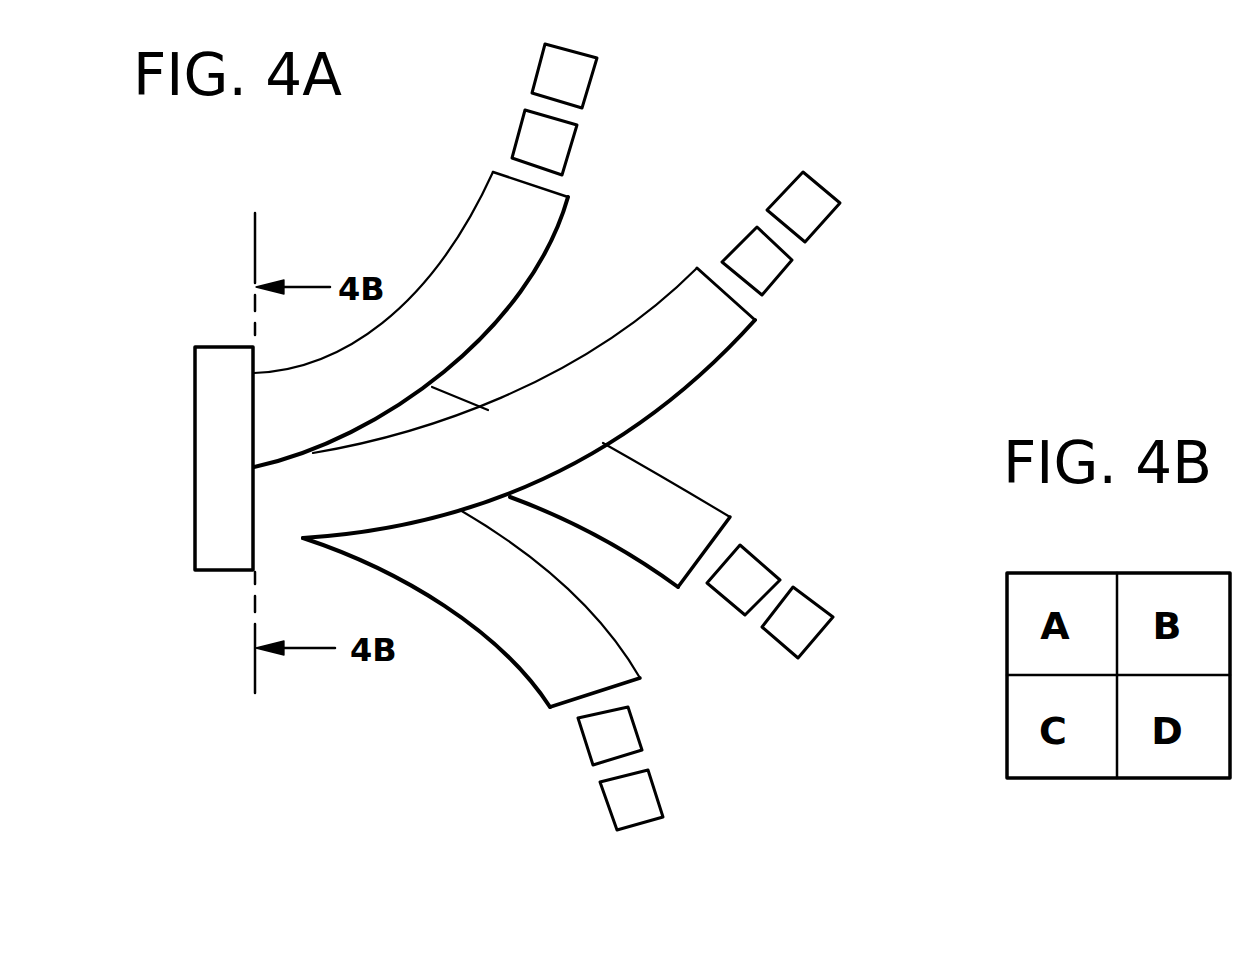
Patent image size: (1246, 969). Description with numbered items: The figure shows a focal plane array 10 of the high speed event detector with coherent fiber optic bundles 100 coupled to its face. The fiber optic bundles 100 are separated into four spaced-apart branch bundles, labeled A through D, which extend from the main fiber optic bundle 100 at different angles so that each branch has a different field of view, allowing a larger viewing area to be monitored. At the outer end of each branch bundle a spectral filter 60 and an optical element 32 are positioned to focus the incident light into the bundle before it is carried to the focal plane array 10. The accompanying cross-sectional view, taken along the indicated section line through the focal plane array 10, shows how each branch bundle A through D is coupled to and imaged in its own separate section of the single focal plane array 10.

The focal plane array 10 is at (195, 533).
The coherent fiber optic bundles 100 is at (503, 327).
The optical element 32 is at (577, 148).
The spectral filter 60 is at (597, 60).